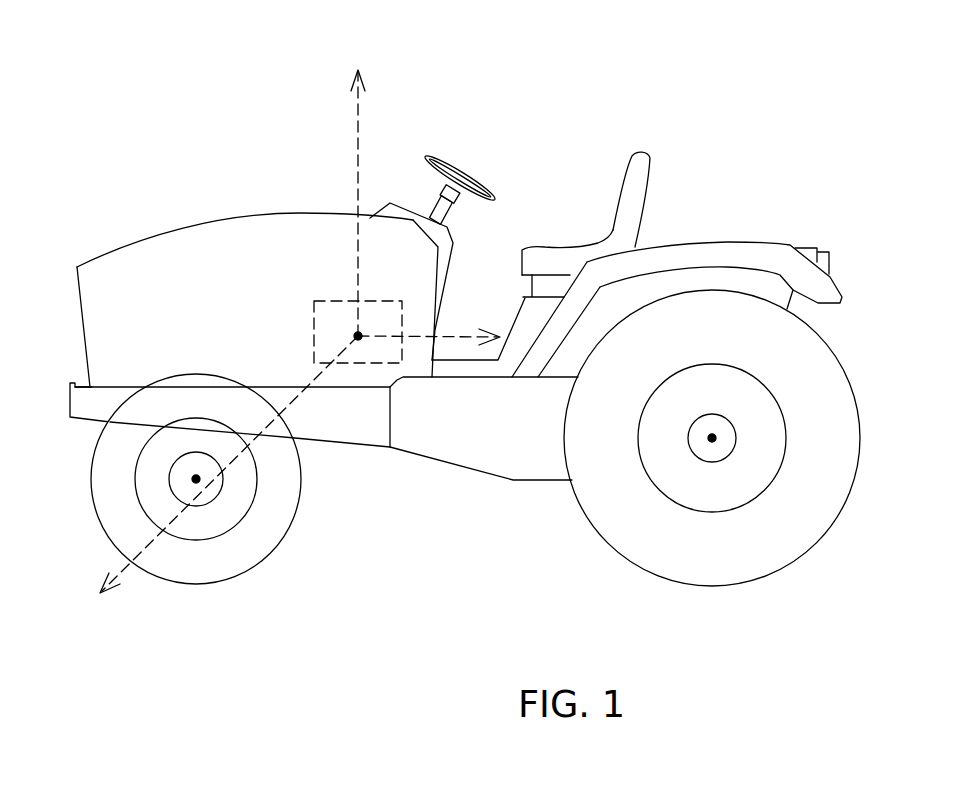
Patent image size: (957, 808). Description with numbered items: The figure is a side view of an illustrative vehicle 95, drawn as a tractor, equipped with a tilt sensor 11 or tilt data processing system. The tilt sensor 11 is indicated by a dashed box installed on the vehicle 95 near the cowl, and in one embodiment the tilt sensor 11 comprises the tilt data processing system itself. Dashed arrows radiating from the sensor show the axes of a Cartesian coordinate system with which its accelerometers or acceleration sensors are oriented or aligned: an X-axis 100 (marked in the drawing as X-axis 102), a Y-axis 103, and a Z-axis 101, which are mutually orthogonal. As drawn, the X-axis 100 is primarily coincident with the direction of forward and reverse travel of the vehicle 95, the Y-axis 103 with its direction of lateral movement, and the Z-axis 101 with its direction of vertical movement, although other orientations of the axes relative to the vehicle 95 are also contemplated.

The X-axis 100 is at (127, 258).
The vehicle 95 is at (377, 517).
The tilt sensor 11 is at (337, 301).
The Z-axis 101 is at (358, 125).
The X-axis 102 is at (463, 337).
The Y-axis 103 is at (153, 540).